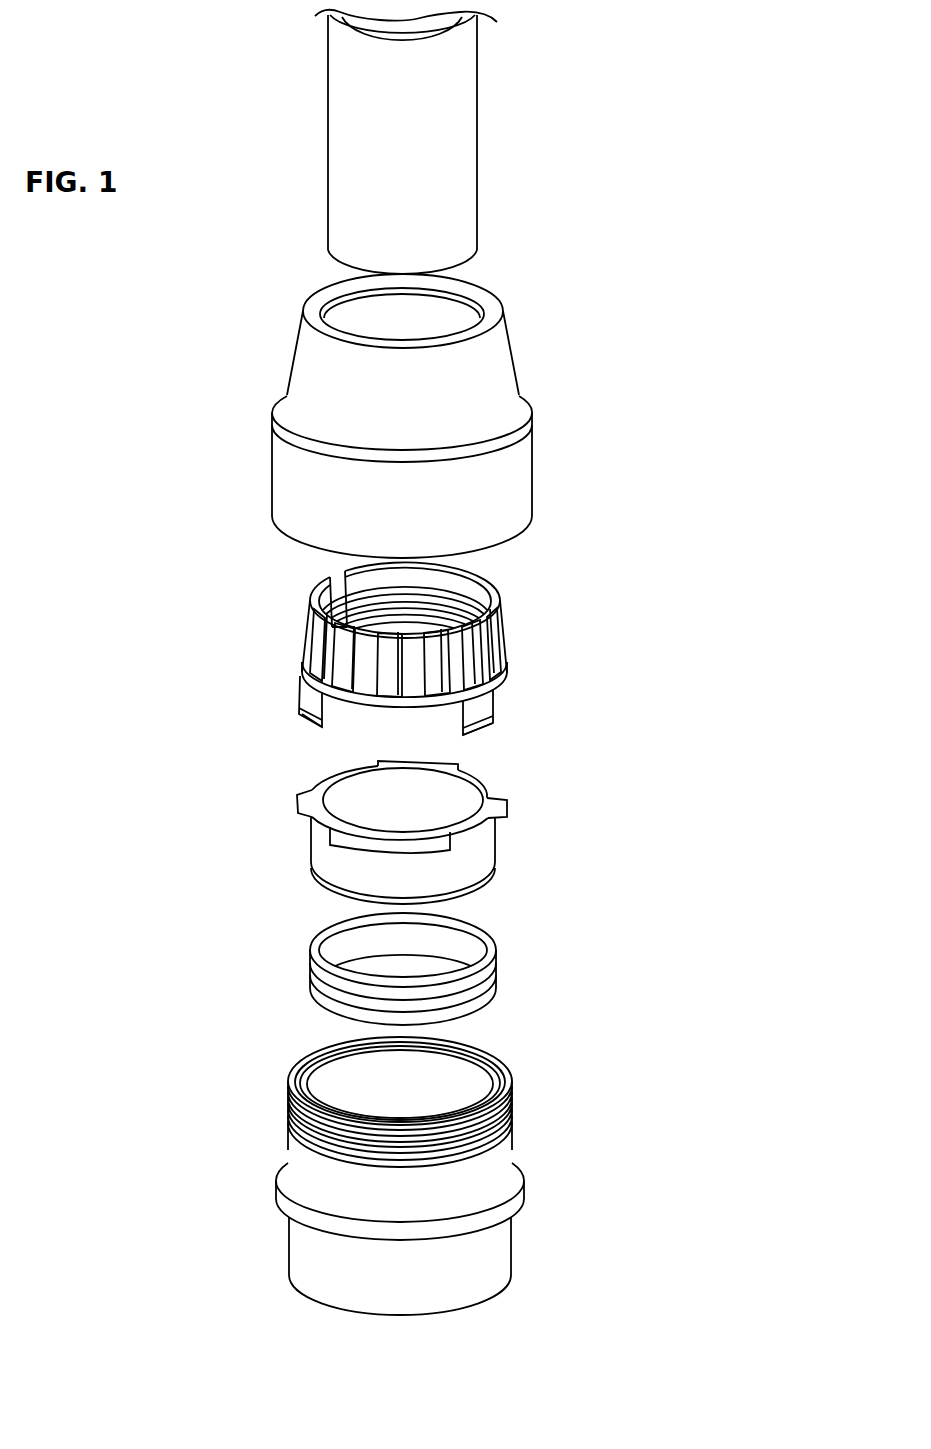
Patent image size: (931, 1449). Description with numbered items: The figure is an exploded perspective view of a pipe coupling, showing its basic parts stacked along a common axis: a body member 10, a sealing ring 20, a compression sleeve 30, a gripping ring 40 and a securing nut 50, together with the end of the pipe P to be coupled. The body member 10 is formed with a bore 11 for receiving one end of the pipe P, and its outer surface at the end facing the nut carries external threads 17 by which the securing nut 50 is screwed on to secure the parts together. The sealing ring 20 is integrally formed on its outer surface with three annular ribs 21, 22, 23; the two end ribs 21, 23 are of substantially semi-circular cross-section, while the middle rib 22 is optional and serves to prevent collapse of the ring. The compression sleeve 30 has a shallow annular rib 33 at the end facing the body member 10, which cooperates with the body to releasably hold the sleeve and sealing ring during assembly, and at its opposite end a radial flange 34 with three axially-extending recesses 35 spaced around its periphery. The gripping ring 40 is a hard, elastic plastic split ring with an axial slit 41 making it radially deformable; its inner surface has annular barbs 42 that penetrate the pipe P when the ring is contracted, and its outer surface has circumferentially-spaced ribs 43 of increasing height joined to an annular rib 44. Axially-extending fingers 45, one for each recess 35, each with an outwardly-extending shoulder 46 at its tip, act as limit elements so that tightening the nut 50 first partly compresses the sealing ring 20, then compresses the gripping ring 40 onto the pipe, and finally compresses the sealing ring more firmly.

The pipe P is at (448, 113).
The securing nut 50 is at (546, 470).
The gripping ring 40 is at (407, 657).
The slit 41 is at (330, 580).
The annular barbs or ribs 42 is at (430, 596).
The axially-extending ribs 43 is at (487, 641).
The annular rib 44 is at (387, 704).
The axially-extending projections 45 is at (302, 690).
The shoulder 46 is at (300, 716).
The compression sleeve 30 is at (424, 818).
The annular rib 33 is at (316, 872).
The radial flange 34 is at (312, 783).
The slots or recesses 35 is at (415, 762).
The sealing ring 20 is at (418, 980).
The end annular rib 21 is at (320, 1000).
The middle annular rib 22 is at (315, 972).
The end annular rib 23 is at (318, 940).
The body member 10 is at (415, 1176).
The bore 11 is at (343, 1080).
The external threads 17 is at (288, 1110).